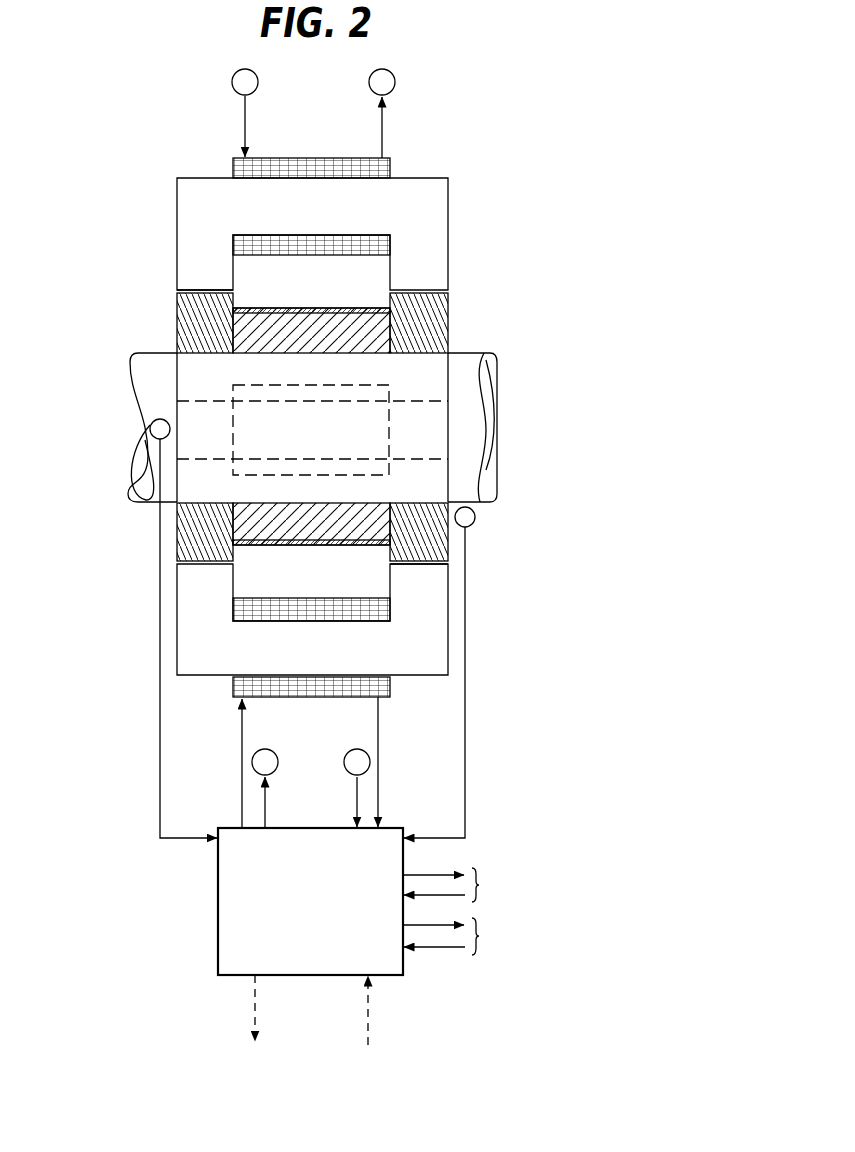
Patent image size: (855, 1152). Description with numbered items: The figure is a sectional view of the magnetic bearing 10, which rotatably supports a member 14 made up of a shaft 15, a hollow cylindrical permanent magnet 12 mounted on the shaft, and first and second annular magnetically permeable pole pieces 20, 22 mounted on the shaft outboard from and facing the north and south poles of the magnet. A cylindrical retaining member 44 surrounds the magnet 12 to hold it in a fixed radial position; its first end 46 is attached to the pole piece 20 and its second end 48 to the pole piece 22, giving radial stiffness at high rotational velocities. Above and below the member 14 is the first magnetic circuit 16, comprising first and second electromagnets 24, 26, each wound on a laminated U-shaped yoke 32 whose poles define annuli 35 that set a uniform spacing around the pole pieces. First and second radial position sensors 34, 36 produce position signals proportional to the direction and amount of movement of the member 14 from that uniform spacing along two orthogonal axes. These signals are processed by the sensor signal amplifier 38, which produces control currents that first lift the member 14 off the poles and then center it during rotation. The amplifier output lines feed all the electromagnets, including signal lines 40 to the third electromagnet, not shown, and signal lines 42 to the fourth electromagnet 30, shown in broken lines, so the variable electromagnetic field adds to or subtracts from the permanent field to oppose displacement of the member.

The magnetic bearing 10 is at (103, 233).
The hollow cylindrical magnet 12 is at (437, 290).
The rotatably supported member 14 is at (477, 342).
The shaft 15 is at (502, 387).
The first magnetic circuit 16 is at (200, 163).
The first magnetically permeable pole piece 20 is at (177, 320).
The second magnetically permeable pole piece 22 is at (448, 325).
The first electromagnet 24 is at (342, 160).
The second electromagnet 26 is at (307, 697).
The fourth electromagnet 30 is at (383, 380).
The U-shaped yoke 32 is at (447, 213).
The first radial position sensor 34 is at (152, 435).
The annuli 35 is at (173, 292).
The second radial position sensor 36 is at (475, 520).
The sensor signal amplifier 38 is at (218, 958).
The signal lines 40 is at (554, 885).
The signal lines 42 is at (554, 936).
The cylindrical retaining member 44 is at (320, 308).
The first end of cylindrical retaining member 46 is at (233, 308).
The second end of cylindrical retaining member 48 is at (390, 308).